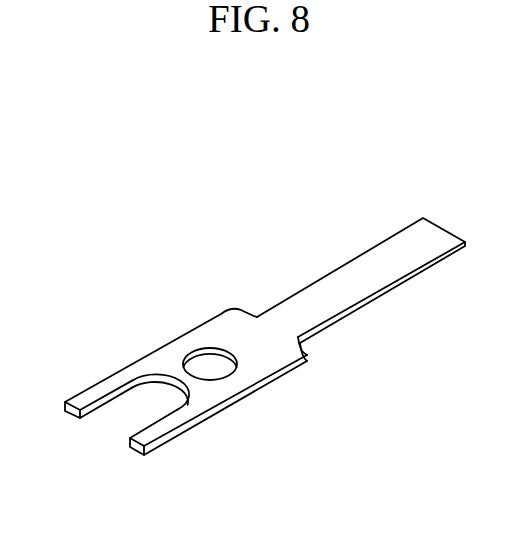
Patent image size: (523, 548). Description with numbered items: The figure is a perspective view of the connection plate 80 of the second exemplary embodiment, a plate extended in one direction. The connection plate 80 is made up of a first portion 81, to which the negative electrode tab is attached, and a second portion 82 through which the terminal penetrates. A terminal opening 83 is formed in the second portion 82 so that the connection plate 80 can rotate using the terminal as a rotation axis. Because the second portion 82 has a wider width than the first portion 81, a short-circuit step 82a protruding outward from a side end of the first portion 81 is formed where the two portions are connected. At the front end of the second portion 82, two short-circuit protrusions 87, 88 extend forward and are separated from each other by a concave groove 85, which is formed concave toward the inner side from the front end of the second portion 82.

The connection plate 80 is at (196, 202).
The first portion 81 is at (410, 242).
The second portion 82 is at (262, 359).
The short-circuit step 82a is at (303, 348).
The terminal opening 83 is at (197, 354).
The concave groove 85 is at (138, 383).
The short-circuit protrusion 87 is at (77, 402).
The short-circuit protrusion 88 is at (146, 438).